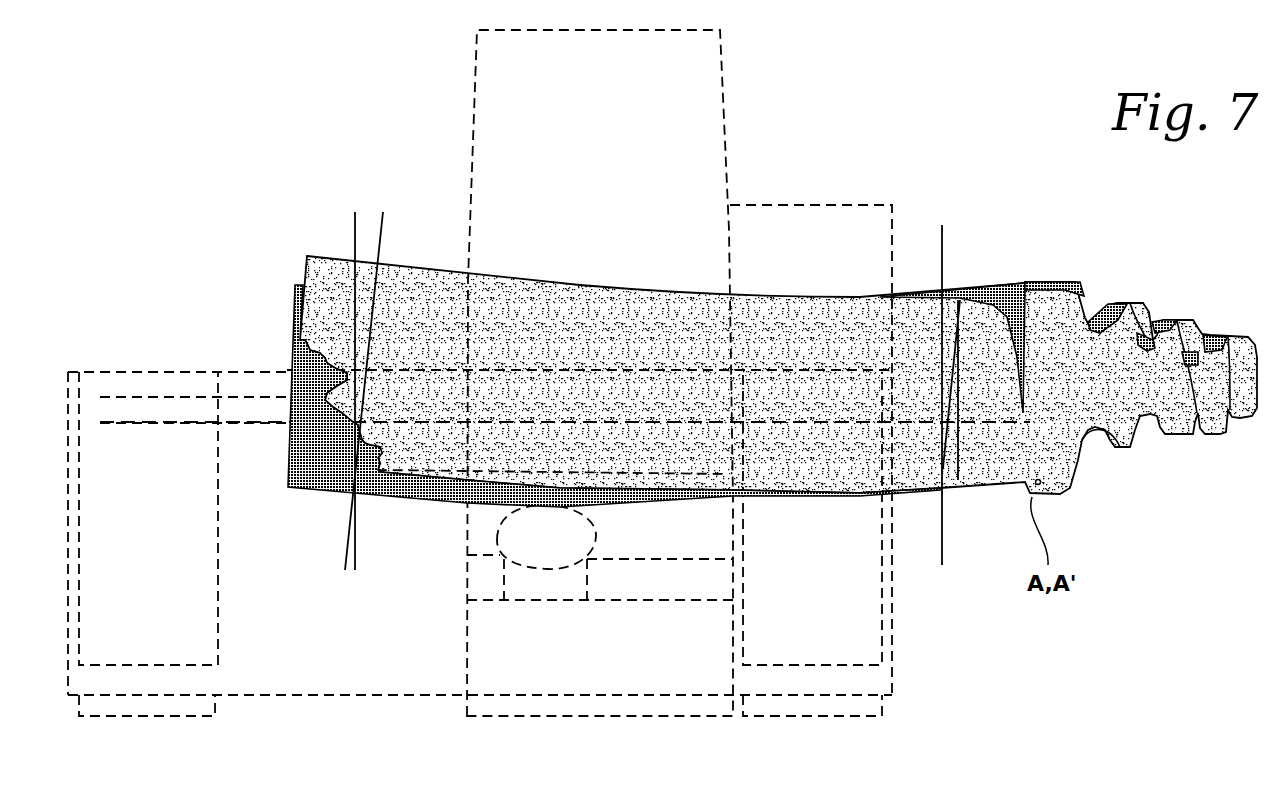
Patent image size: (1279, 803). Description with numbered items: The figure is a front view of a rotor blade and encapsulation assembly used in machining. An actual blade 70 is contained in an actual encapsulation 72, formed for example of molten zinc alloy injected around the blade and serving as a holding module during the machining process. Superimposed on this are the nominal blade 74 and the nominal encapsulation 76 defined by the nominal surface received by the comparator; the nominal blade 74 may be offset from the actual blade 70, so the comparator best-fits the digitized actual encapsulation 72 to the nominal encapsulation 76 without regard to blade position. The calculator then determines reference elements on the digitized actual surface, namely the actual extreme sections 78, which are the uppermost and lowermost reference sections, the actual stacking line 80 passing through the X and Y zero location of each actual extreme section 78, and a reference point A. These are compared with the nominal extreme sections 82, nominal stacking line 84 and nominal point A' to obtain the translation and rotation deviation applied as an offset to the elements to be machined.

The actual blade 70 is at (320, 248).
The actual encapsulation 72 is at (682, 373).
The nominal blade 74 is at (280, 297).
The nominal encapsulation 76 is at (546, 537).
The actual extreme sections 78 is at (385, 227).
The actual stacking line 80 is at (150, 423).
The nominal extreme sections 82 is at (353, 229).
The nominal stacking line 84 is at (150, 423).